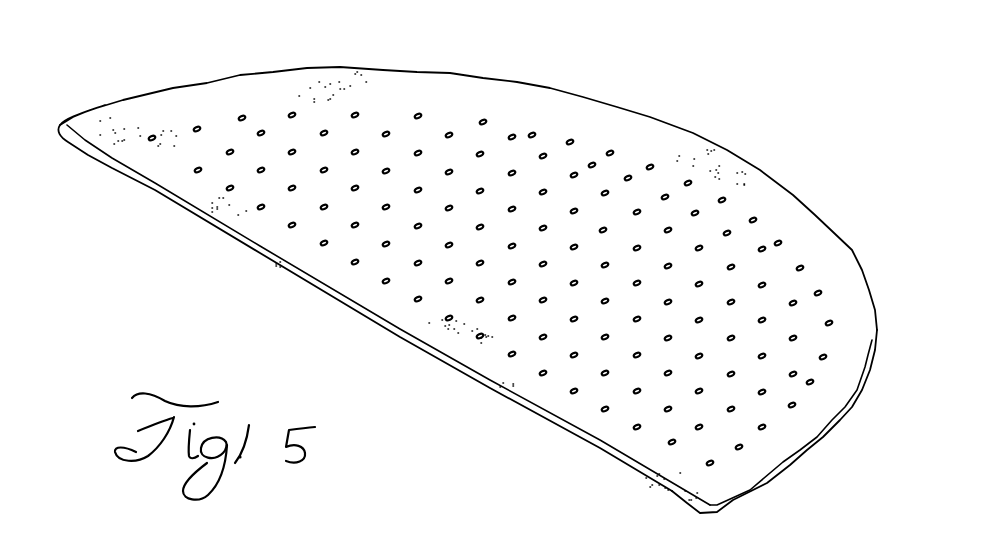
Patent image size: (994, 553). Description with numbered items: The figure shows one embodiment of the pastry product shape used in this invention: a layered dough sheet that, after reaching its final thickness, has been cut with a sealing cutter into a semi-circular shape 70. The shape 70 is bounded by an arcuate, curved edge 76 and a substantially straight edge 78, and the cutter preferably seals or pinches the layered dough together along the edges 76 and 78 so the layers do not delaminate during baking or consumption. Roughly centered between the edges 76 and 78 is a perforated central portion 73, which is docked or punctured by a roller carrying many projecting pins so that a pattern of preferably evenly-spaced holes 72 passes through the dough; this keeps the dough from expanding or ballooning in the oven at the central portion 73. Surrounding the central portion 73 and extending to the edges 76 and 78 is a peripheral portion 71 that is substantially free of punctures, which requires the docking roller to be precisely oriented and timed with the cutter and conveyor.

The semi-circular shape 70 is at (467, 262).
The peripheral portion 71 is at (287, 90).
The perforations 72 is at (702, 424).
The central portion 73 is at (592, 179).
The curved edge 76 is at (597, 90).
The straight edge 78 is at (267, 259).